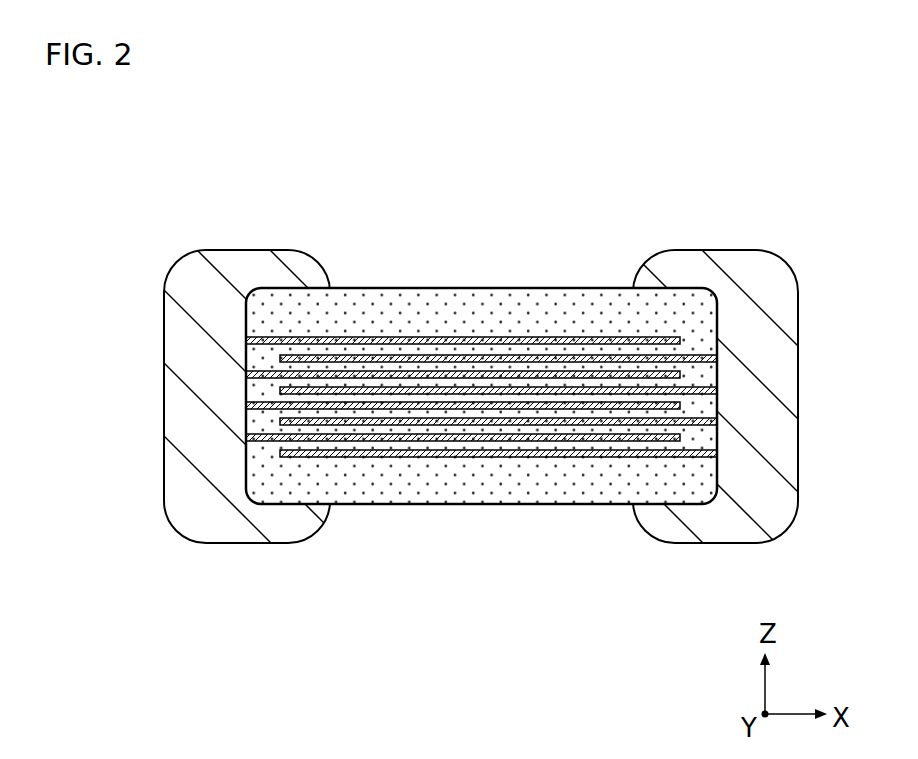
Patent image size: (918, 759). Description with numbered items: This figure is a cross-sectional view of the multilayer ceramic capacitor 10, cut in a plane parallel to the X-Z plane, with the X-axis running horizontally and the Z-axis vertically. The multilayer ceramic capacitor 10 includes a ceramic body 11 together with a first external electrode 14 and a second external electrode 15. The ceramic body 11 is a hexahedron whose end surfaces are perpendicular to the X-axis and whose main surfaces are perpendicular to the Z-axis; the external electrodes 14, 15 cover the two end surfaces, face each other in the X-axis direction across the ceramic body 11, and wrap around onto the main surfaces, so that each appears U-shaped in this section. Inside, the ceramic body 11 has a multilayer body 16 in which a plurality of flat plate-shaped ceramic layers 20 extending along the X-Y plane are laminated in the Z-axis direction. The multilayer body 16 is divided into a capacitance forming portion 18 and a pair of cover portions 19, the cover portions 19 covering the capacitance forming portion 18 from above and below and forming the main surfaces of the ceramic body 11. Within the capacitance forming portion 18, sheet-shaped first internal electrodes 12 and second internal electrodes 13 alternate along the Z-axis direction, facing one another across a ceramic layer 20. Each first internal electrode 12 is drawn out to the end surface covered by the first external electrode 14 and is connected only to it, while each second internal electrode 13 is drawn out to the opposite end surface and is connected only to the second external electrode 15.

The multilayer ceramic capacitor 10 is at (459, 374).
The ceramic body 11 is at (506, 390).
The first internal electrodes 12 is at (353, 437).
The second internal electrodes 13 is at (553, 452).
The first external electrode 14 is at (180, 400).
The second external electrode 15 is at (780, 395).
The multilayer body 16 is at (513, 490).
The capacitance forming portion 18 is at (718, 340).
The cover portions 19 is at (718, 290).
The ceramic layers 20 is at (482, 351).